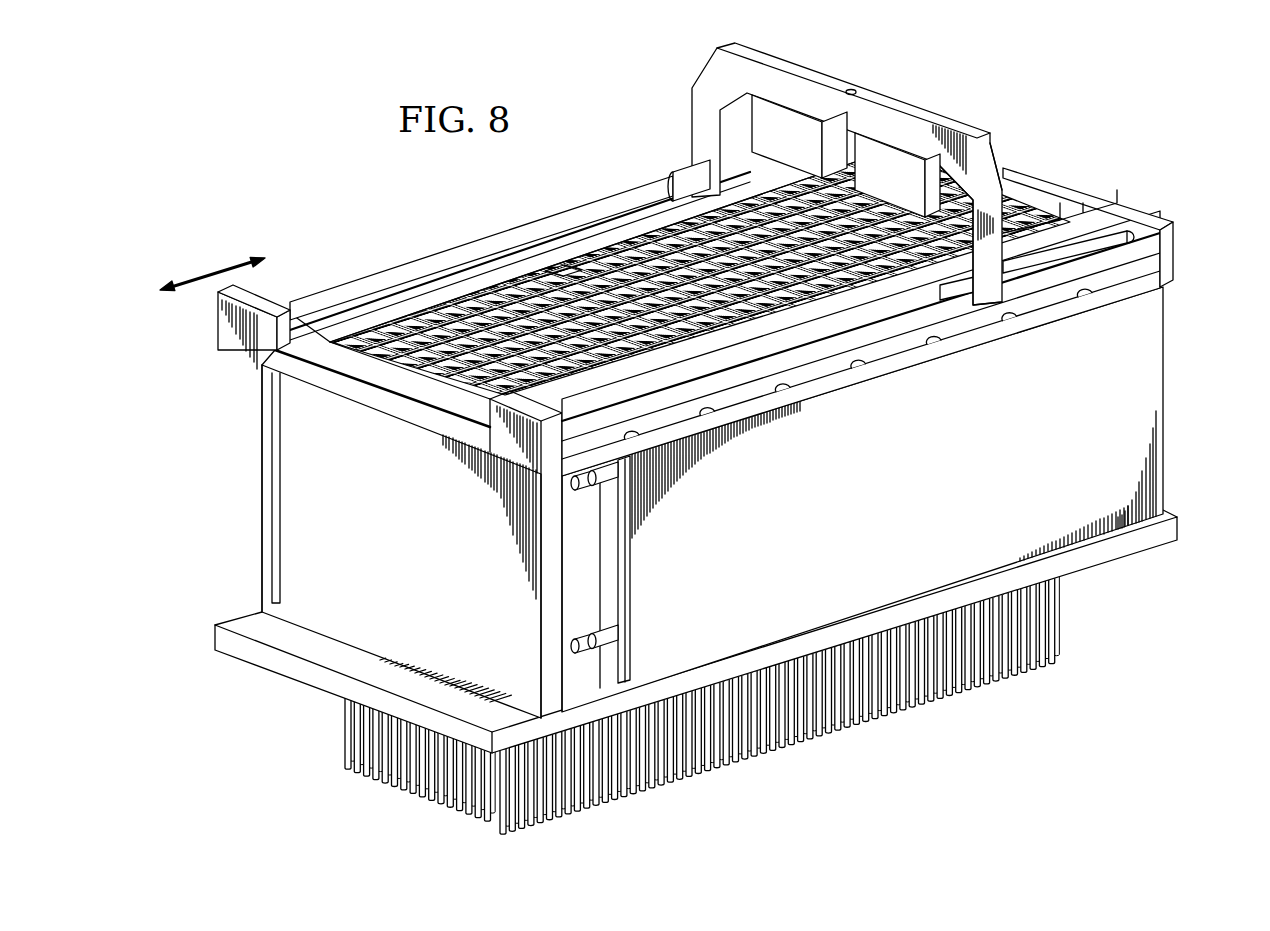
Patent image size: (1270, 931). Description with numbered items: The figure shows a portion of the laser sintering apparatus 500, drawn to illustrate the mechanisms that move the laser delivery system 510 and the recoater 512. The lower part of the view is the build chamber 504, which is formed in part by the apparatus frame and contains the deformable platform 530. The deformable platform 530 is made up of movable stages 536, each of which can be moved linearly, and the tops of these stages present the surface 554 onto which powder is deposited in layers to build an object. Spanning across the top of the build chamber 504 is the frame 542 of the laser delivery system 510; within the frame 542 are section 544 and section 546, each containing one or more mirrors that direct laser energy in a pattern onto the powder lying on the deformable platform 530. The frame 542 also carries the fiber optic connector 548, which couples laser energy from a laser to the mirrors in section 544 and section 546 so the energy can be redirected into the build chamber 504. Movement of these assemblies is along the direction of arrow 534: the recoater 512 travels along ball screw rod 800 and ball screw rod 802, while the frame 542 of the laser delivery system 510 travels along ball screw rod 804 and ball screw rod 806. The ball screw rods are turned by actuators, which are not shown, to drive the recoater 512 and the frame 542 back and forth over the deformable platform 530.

The laser sintering apparatus 500 is at (704, 428).
The build chamber 504 is at (305, 478).
The laser delivery system 510 is at (811, 164).
The recoater 512 is at (717, 310).
The deformable platform 530 is at (700, 274).
The arrow 534 is at (213, 271).
The movable stages 536 is at (387, 318).
The frame 542 is at (947, 128).
The section 544 is at (782, 120).
The section 546 is at (897, 168).
The fiber optic connector 548 is at (852, 90).
The surface 554 is at (550, 283).
The ball screw rod 800 is at (672, 183).
The ball screw rod 802 is at (880, 345).
The ball screw rod 804 is at (610, 195).
The ball screw rod 806 is at (780, 342).